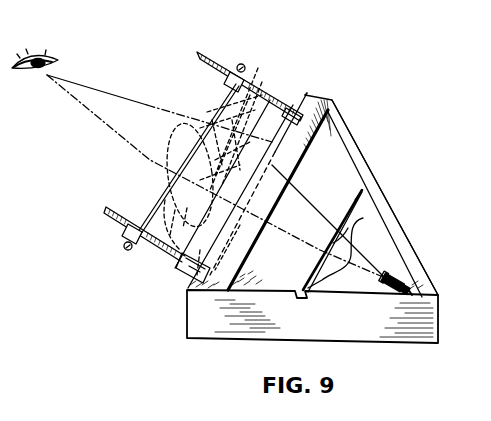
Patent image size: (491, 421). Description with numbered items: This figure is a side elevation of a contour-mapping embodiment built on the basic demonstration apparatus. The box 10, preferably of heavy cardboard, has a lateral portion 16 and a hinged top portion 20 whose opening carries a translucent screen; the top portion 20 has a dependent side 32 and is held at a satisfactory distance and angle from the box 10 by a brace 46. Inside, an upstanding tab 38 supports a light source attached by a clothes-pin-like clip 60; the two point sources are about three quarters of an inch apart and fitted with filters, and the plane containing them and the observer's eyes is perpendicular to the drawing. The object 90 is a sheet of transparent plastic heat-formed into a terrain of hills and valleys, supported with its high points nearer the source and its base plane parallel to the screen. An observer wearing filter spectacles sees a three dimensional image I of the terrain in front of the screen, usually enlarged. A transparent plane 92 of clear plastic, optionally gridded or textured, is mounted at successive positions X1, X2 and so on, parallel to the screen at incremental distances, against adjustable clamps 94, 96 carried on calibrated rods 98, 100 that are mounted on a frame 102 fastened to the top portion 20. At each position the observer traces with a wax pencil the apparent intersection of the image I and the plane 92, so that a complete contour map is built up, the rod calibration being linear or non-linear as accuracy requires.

The box 10 is at (341, 186).
The lateral portion 16 is at (443, 313).
The top portion 20 is at (306, 93).
The dependent side 32 is at (322, 101).
The upstanding tab 38 is at (412, 296).
The brace 46 is at (413, 252).
The clip 60 is at (386, 289).
The object 90 is at (363, 218).
The transparent plane 92 is at (212, 112).
The adjustable clamp 94 is at (132, 250).
The adjustable clamp 96 is at (245, 70).
The calibrated rod 98 is at (125, 234).
The calibrated rod 100 is at (201, 54).
The frame 102 is at (181, 276).
The three dimensional image I is at (165, 200).
The plane position X1 is at (215, 160).
The plane position X2 is at (200, 180).